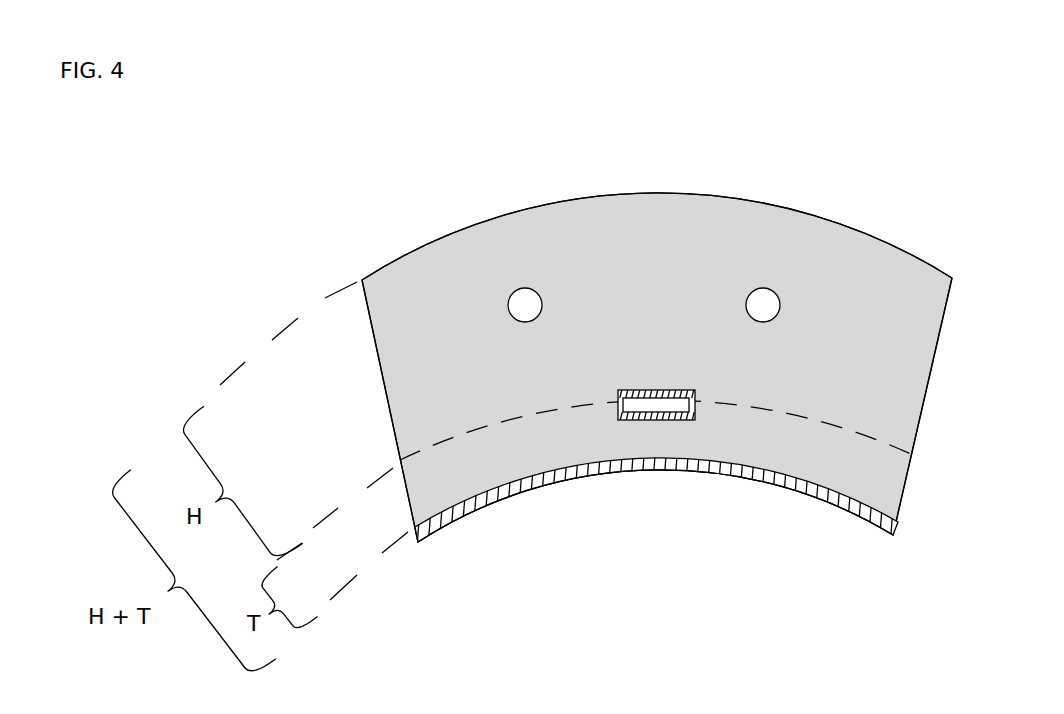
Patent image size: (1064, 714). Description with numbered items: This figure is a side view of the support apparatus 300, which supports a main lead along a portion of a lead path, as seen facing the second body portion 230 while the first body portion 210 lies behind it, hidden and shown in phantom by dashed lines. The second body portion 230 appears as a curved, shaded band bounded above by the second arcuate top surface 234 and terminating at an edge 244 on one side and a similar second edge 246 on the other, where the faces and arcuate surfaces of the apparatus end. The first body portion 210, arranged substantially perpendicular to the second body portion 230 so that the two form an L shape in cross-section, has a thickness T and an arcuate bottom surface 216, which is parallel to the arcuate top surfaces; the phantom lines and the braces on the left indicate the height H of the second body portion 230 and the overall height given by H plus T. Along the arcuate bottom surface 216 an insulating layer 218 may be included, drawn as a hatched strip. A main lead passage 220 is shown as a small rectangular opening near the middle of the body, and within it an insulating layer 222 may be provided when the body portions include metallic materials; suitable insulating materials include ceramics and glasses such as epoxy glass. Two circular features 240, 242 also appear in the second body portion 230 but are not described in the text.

The support apparatus 300 is at (654, 329).
The second body portion 230 is at (737, 223).
The second arcuate top surface 234 is at (557, 202).
The edge 244 is at (932, 382).
The second edge 246 is at (381, 380).
The first body portion 210 is at (804, 452).
The insulating layer 218 is at (540, 492).
The arcuate bottom surface 216 is at (478, 498).
The hole 240 is at (525, 305).
The hole 242 is at (763, 305).
The main lead passage 220 is at (662, 403).
The insulating layer 222 is at (635, 417).